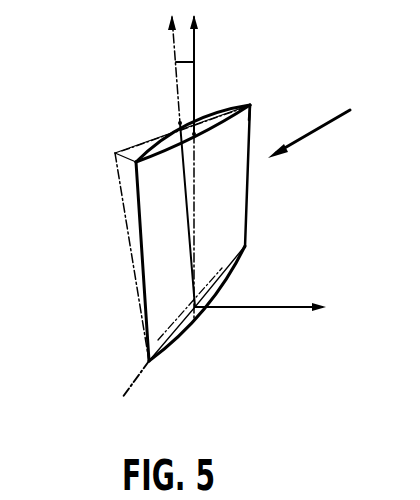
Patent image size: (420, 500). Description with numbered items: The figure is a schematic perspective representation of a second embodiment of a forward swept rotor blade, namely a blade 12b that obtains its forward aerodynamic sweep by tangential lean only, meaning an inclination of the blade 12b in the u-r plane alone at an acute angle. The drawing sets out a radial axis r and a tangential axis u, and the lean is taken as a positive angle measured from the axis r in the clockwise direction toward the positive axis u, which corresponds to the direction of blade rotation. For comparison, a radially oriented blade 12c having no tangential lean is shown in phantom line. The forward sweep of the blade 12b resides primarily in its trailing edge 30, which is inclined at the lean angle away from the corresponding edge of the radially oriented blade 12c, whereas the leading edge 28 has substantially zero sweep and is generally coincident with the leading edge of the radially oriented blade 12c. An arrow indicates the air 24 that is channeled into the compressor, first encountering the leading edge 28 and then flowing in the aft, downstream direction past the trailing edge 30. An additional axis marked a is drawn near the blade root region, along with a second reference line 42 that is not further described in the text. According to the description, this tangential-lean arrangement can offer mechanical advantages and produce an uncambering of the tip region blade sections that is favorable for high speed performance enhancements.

The radially oriented blade 12c is at (116, 169).
The blade 12b is at (247, 217).
The leading edge 28 is at (250, 129).
The air 24 is at (330, 128).
The vertical reference axis 42 is at (197, 217).
The trailing edge 30 is at (141, 245).
The r-axis r is at (173, 33).
The u-axis u is at (283, 308).
The axis a is at (141, 373).